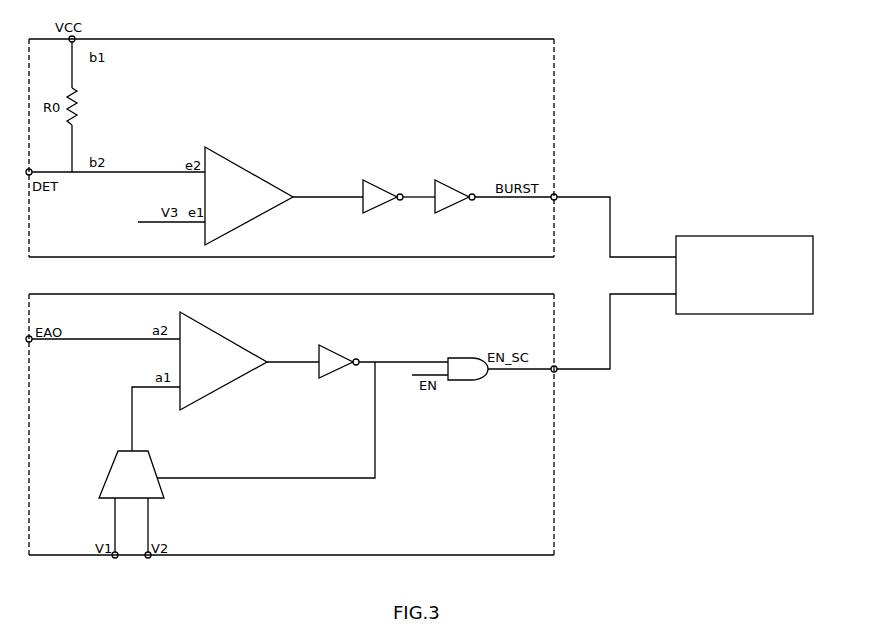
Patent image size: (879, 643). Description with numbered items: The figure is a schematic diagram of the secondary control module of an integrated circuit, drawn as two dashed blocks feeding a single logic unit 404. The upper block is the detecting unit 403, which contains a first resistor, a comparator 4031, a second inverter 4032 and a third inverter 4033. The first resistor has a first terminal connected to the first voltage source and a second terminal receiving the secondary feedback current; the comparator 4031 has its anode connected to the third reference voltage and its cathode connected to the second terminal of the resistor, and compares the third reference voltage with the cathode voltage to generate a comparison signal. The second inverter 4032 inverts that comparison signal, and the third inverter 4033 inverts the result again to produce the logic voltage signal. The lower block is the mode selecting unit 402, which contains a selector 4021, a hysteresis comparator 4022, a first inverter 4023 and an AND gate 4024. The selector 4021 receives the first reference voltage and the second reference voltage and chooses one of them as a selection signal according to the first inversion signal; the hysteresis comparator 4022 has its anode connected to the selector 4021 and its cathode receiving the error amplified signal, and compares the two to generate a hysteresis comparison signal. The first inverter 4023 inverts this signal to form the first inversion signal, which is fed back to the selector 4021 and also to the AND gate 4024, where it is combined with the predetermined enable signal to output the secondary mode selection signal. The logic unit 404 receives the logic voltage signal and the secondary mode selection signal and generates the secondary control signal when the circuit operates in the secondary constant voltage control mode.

The detecting unit 403 is at (554, 98).
The mode selecting unit 402 is at (554, 512).
The logic unit 404 is at (744, 275).
The comparator 4031 is at (249, 196).
The second inverter 4032 is at (372, 182).
The third inverter 4033 is at (449, 182).
The selector 4021 is at (131, 474).
The hysteresis comparator 4022 is at (223, 361).
The first inverter 4023 is at (328, 346).
The AND gate 4024 is at (458, 358).